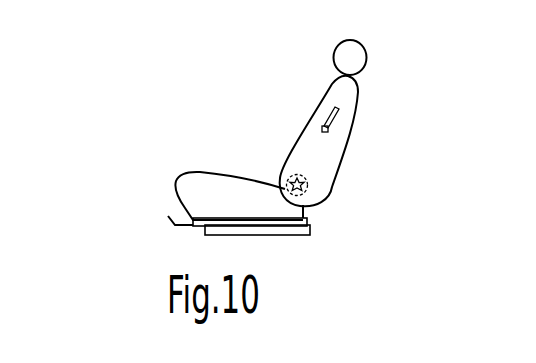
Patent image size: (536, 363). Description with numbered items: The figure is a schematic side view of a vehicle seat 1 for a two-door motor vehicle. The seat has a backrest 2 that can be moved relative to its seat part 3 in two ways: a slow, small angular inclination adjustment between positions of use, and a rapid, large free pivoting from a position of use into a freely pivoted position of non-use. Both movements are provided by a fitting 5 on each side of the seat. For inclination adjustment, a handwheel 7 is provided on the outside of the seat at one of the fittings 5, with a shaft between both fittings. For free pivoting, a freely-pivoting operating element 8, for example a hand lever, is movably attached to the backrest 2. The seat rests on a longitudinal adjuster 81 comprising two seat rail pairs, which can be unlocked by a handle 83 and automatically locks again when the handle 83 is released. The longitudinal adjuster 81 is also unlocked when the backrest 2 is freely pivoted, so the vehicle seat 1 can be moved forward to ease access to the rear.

The vehicle seat 1 is at (277, 128).
The backrest 2 is at (308, 168).
The seat part 3 is at (193, 187).
The fitting 5 is at (320, 185).
The handwheel 7 is at (320, 186).
The freely-pivoting operating element 8 is at (329, 130).
The longitudinal adjuster 81 is at (313, 231).
The handle 83 is at (168, 222).